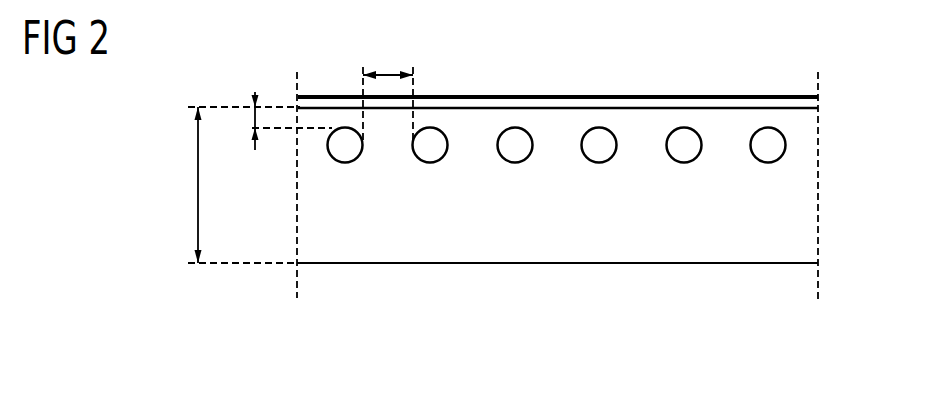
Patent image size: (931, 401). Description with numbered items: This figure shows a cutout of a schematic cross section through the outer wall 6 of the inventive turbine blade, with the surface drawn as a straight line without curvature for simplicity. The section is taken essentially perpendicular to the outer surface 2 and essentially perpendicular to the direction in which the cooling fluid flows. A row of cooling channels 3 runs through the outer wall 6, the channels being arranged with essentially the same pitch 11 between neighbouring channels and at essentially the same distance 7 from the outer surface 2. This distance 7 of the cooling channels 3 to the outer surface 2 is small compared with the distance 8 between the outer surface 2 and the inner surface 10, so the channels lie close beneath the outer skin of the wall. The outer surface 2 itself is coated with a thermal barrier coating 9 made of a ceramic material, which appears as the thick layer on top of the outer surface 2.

The outer surface 2 is at (470, 107).
The cooling channels 3 is at (687, 150).
The outer wall 6 is at (445, 248).
The distance 7 is at (255, 116).
The distance 8 is at (198, 180).
The thermal barrier coating 9 is at (557, 99).
The inner surface 10 is at (497, 265).
The pitch 11 is at (389, 74).